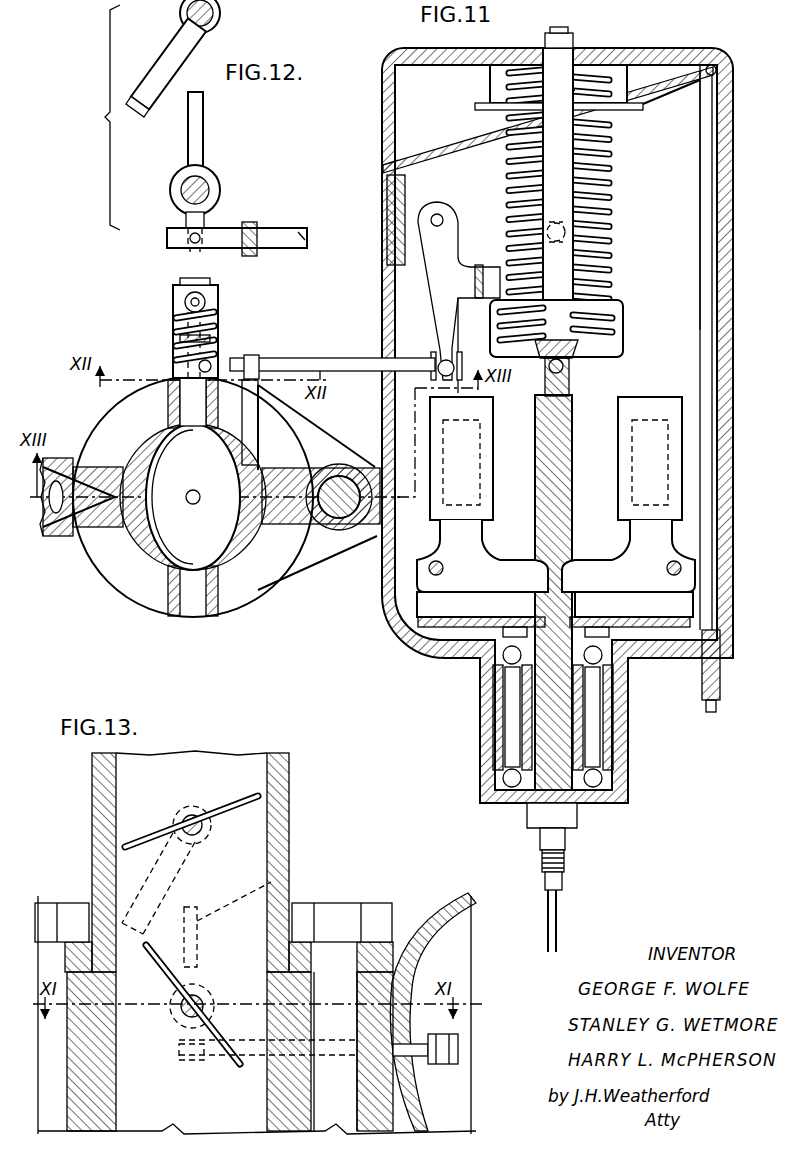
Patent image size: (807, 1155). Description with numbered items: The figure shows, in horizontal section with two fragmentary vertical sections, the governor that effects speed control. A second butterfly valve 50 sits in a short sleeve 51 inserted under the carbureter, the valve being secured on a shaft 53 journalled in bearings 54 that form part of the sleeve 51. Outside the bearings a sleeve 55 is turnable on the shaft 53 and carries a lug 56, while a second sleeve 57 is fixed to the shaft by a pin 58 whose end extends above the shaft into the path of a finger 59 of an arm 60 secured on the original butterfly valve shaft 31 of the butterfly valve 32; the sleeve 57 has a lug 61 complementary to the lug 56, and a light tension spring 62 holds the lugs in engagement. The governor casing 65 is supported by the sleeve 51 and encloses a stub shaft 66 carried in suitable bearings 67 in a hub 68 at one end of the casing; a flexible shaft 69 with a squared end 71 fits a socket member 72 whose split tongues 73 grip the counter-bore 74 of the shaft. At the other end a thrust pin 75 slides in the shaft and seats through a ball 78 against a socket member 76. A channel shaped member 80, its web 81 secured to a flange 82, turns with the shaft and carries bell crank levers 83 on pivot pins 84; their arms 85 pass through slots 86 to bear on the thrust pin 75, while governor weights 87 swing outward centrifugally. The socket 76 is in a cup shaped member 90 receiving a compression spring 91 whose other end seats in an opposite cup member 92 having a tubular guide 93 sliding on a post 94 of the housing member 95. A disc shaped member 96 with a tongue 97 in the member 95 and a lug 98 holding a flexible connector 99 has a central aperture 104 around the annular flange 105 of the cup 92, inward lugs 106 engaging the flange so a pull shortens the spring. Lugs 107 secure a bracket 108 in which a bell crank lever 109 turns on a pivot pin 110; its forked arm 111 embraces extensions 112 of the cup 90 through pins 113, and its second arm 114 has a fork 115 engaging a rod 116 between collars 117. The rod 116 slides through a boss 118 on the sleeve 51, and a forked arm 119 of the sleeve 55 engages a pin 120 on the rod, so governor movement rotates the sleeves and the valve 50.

In FIG. 12, the butterfly valve shaft 31 is at (215, 20).
In FIG. 13, the butterfly valve shaft 31 is at (204, 836).
In FIG. 13, the butterfly valve 32 is at (217, 803).
In FIG. 11, the second butterfly valve 50 is at (162, 513).
In FIG. 13, the second butterfly valve 50 is at (213, 1034).
In FIG. 11, the sleeve 51 is at (261, 592).
In FIG. 11, the shaft 53 is at (192, 612).
In FIG. 13, the shaft 53 is at (186, 1018).
In FIG. 11, the bearings 54 is at (168, 404).
In FIG. 11, the sleeve 55 is at (220, 352).
In FIG. 12, the sleeve 55 is at (219, 186).
In FIG. 11, the lug 56 is at (178, 342).
In FIG. 11, the second sleeve 57 is at (218, 296).
In FIG. 11, the pin 58 is at (185, 300).
In FIG. 12, the pin 58 is at (203, 160).
In FIG. 13, the pin 58 is at (271, 885).
In FIG. 12, the finger 59 is at (134, 118).
In FIG. 12, the arm 60 is at (158, 72).
In FIG. 13, the arm 60 is at (123, 880).
In FIG. 11, the lug 61 is at (222, 322).
In FIG. 11, the tension spring 62 is at (175, 322).
In FIG. 11, the casing 65 is at (733, 452).
In FIG. 13, the casing 65 is at (416, 933).
In FIG. 11, the stub shaft 66 is at (582, 720).
In FIG. 11, the bearing shell 67 is at (490, 767).
In FIG. 11, the hub 68 is at (620, 700).
In FIG. 11, the flexible shaft 69 is at (557, 940).
In FIG. 11, the square member 71 is at (563, 880).
In FIG. 11, the socket member 72 is at (566, 858).
In FIG. 11, the tongues 73 is at (566, 836).
In FIG. 11, the counter-bore 74 is at (582, 745).
In FIG. 11, the thrust pin 75 is at (560, 478).
In FIG. 11, the socket member 76 is at (565, 367).
In FIG. 11, the ball 78 is at (572, 378).
In FIG. 11, the channel shaped member 80 is at (405, 612).
In FIG. 11, the web 81 is at (476, 604).
In FIG. 11, the flange 82 is at (634, 604).
In FIG. 11, the bell crank levers 83 is at (440, 586).
In FIG. 11, the pivot pins 84 is at (430, 568).
In FIG. 11, the arms 85 is at (498, 573).
In FIG. 11, the slots 86 is at (578, 552).
In FIG. 11, the governor weights 87 is at (496, 456).
In FIG. 11, the cup shaped member 90 is at (612, 338).
In FIG. 11, the compression spring 91 is at (600, 192).
In FIG. 11, the cup shaped member 92 is at (493, 76).
In FIG. 11, the tubular central guide portion 93 is at (585, 144).
In FIG. 11, the post 94 is at (560, 158).
In FIG. 11, the member 95 is at (640, 30).
In FIG. 11, the disc shaped member 96 is at (642, 88).
In FIG. 11, the tongue 97 is at (385, 166).
In FIG. 11, the lug 98 is at (717, 71).
In FIG. 11, the flexible connector 99 is at (714, 157).
In FIG. 11, the central aperture 104 is at (493, 130).
In FIG. 11, the annular flange 105 is at (640, 112).
In FIG. 11, the lugs 106 is at (556, 85).
In FIG. 11, the lugs 107 is at (390, 180).
In FIG. 11, the bracket 108 is at (459, 277).
In FIG. 11, the bell crank lever 109 is at (444, 252).
In FIG. 11, the pivot pin 110 is at (444, 220).
In FIG. 11, the forked arm 111 is at (498, 280).
In FIG. 11, the extensions 112 is at (585, 258).
In FIG. 11, the pins 113 is at (604, 239).
In FIG. 11, the second arm 114 is at (447, 340).
In FIG. 11, the fork 115 is at (449, 350).
In FIG. 11, the rod 116 is at (348, 362).
In FIG. 12, the rod 116 is at (300, 240).
In FIG. 13, the rod 116 is at (407, 1064).
In FIG. 11, the collars 117 is at (438, 362).
In FIG. 11, the boss 118 is at (252, 360).
In FIG. 12, the boss 118 is at (252, 225).
In FIG. 12, the forked arm 119 is at (205, 226).
In FIG. 12, the pin 120 is at (192, 250).